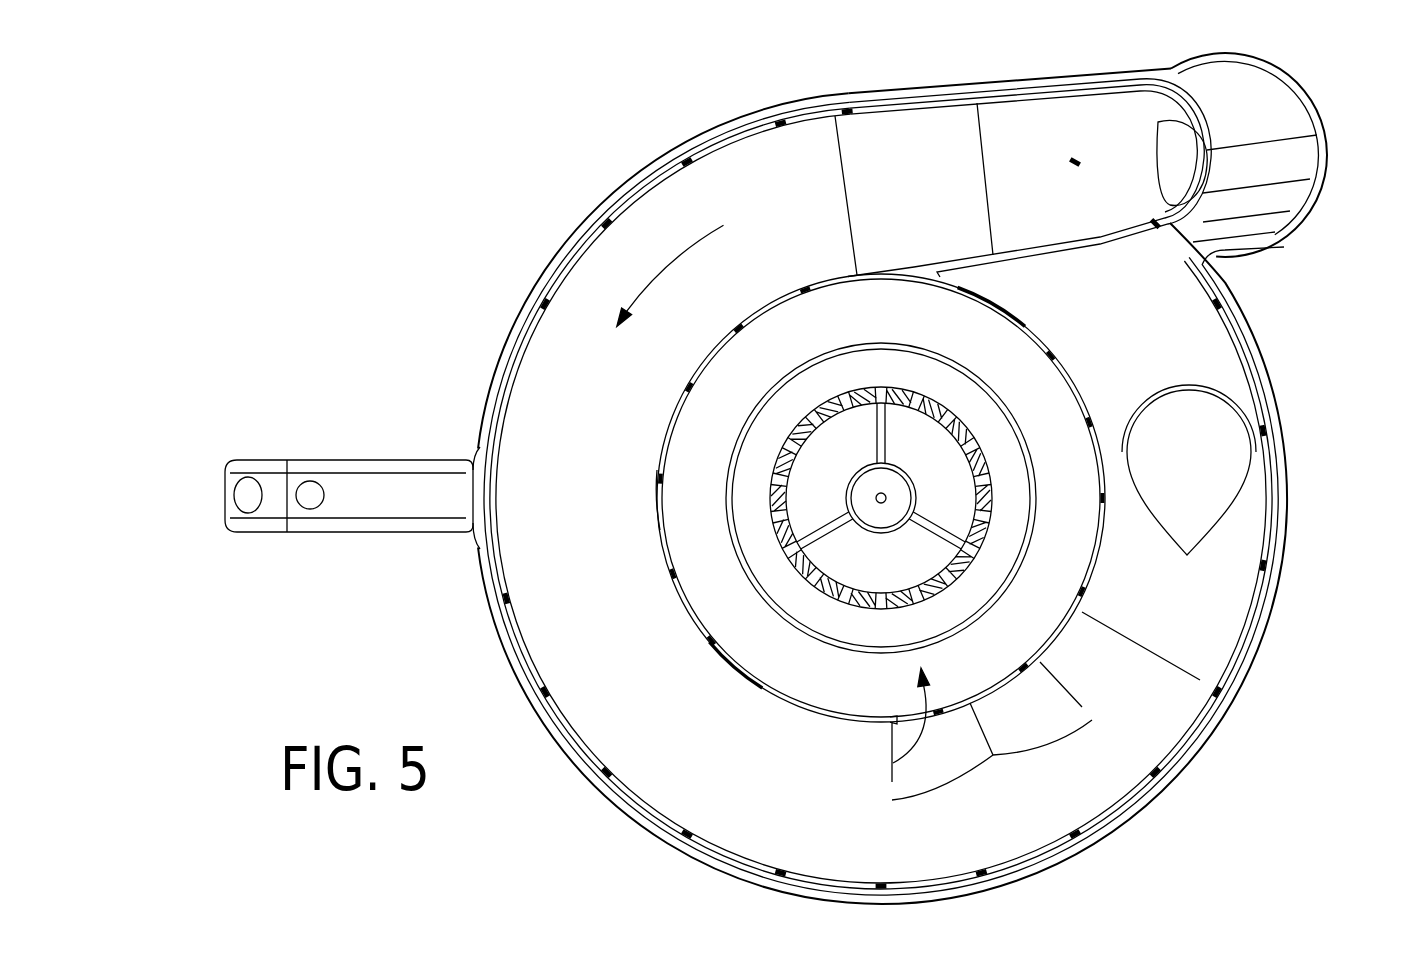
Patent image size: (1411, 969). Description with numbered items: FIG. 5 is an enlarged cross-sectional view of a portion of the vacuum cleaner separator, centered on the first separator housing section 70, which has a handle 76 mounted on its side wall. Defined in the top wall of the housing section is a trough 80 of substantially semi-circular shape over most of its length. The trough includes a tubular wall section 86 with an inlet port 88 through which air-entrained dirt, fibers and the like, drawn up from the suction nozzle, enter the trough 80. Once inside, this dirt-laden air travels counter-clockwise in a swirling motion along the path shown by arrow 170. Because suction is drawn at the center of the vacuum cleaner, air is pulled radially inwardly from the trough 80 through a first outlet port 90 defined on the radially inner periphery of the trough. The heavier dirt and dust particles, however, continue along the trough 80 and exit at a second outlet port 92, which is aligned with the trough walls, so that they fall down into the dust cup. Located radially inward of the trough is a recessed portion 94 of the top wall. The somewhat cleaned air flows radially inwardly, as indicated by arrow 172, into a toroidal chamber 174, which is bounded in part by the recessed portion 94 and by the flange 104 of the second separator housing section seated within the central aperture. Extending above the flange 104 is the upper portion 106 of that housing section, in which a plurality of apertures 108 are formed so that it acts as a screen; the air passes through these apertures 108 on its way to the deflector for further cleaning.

The first separator housing section 70 is at (466, 624).
The handle 76 is at (385, 466).
The trough 80 is at (620, 750).
The tubular wall section 86 is at (1300, 155).
The inlet port 88 is at (1165, 163).
The first outlet port 90 is at (952, 732).
The second outlet port 92 is at (1213, 450).
The recessed portion 94 is at (712, 650).
The flange 104 is at (942, 483).
The upper portion 106 is at (940, 402).
The apertures 108 is at (965, 432).
The arrow 170 is at (650, 283).
The arrow 172 is at (873, 765).
The toroidal chamber 174 is at (700, 405).